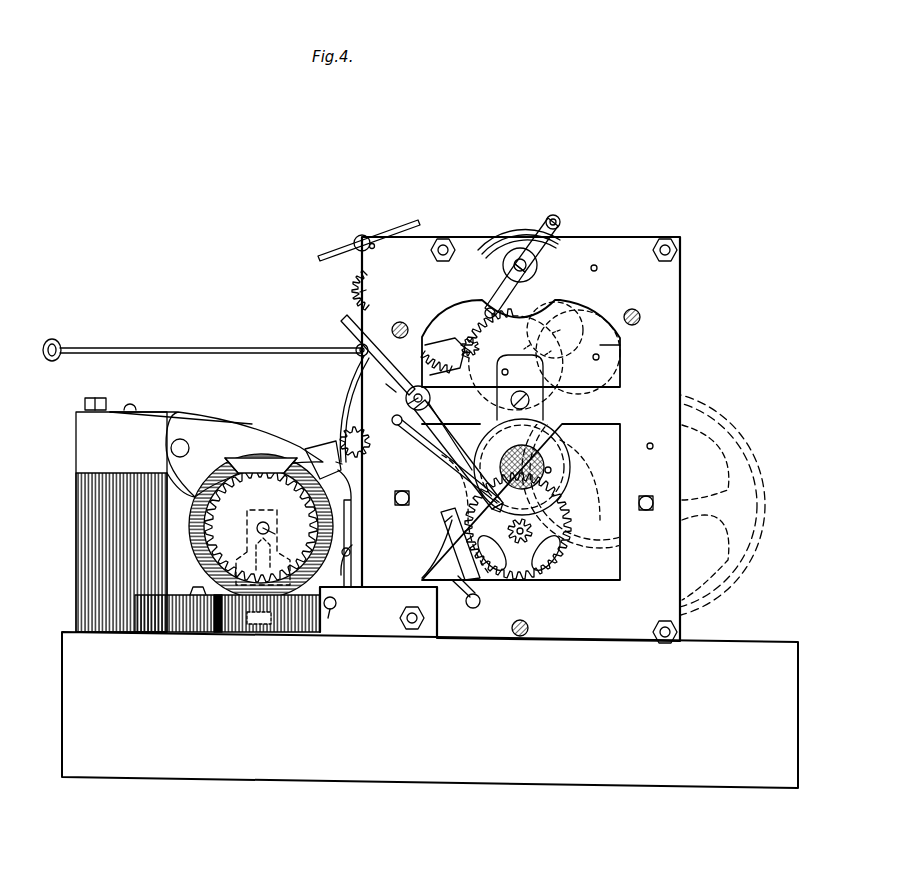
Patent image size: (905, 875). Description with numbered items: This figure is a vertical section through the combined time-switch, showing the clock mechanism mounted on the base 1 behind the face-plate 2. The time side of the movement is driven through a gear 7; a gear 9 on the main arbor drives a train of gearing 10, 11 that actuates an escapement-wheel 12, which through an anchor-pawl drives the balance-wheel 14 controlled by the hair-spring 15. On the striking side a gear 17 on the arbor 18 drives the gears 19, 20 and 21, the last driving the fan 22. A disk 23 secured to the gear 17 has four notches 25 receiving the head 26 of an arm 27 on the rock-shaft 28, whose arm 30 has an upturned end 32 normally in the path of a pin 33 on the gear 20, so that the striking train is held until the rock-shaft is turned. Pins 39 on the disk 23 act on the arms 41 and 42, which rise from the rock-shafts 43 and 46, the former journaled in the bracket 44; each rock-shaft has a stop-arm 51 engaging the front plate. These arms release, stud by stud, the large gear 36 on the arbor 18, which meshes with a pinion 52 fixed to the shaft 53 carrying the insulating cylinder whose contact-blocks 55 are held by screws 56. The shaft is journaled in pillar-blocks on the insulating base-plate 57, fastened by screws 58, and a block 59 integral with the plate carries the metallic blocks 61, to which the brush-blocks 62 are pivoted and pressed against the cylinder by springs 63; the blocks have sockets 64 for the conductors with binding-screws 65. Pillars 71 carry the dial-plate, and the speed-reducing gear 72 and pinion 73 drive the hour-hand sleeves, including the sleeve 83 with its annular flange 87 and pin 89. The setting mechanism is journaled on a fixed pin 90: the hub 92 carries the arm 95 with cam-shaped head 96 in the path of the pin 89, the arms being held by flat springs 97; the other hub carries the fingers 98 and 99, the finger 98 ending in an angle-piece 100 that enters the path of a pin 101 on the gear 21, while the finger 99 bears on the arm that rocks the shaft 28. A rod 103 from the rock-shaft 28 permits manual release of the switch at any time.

The base 1 is at (430, 710).
The face-plate 2 is at (615, 236).
The gear 7 is at (742, 444).
The gear 9 is at (614, 445).
The train of gearing 10 is at (612, 367).
The train of gearing 11 is at (548, 338).
The escapement-wheel 12 is at (600, 345).
The balance-wheel 14 is at (524, 232).
The hair-spring 15 is at (566, 208).
The gear 17 is at (398, 432).
The arbor 18 is at (400, 506).
The gear 19 is at (488, 382).
The gear 20 is at (427, 356).
The gear 21 is at (350, 298).
The fan 22 is at (346, 246).
The disk 23 is at (416, 460).
The notches 25 is at (351, 459).
The head 26 is at (324, 447).
The arm 27 is at (332, 396).
The rock-shaft 28 is at (356, 350).
The arm 30 is at (381, 379).
The upturned end 32 is at (520, 387).
The pin 33 is at (468, 340).
The large gear 36 is at (350, 428).
The pins 39 is at (451, 544).
The arm 41 is at (352, 538).
The arm 42 is at (442, 528).
The rock-shaft 43 is at (327, 615).
The bracket 44 is at (378, 602).
The rock-shaft 46 is at (473, 608).
The stop-arm 51 is at (342, 558).
The pinion 52 is at (261, 526).
The shaft 53 is at (279, 533).
The contact-blocks 55 is at (261, 525).
The screws 56 is at (255, 547).
The insulating base-plate 57 is at (210, 634).
The screws 58 is at (262, 634).
The block 59 is at (76, 550).
The metallic blocks 61 is at (121, 522).
The brush-blocks 62 is at (216, 454).
The springs 63 is at (206, 421).
The sockets 64 is at (181, 485).
The binding-screw 65 is at (97, 398).
The pillars 71 is at (632, 303).
The speed-reducing gear 72 is at (521, 524).
The pinion 73 is at (532, 532).
The sleeve 83 is at (536, 466).
The annular flange 87 is at (530, 446).
The pin 89 is at (551, 477).
The fixed pin 90 is at (406, 396).
The hub 92 is at (406, 404).
The arm 95 is at (434, 462).
The cam-shaped head 96 is at (500, 506).
The flat springs 97 is at (433, 428).
The finger 98 is at (386, 428).
The finger 99 is at (450, 418).
The angle-piece 100 is at (346, 320).
The pin 101 is at (362, 293).
The rod 103 is at (222, 347).